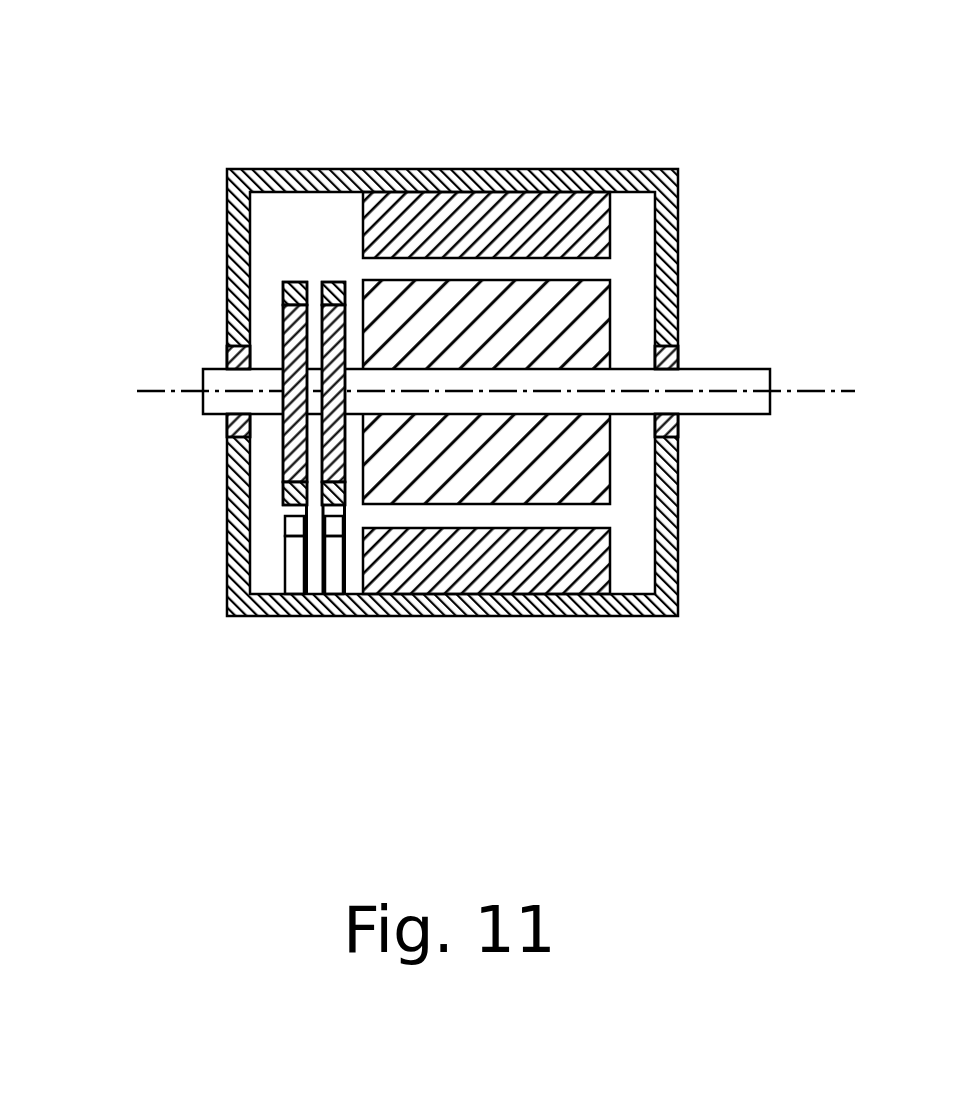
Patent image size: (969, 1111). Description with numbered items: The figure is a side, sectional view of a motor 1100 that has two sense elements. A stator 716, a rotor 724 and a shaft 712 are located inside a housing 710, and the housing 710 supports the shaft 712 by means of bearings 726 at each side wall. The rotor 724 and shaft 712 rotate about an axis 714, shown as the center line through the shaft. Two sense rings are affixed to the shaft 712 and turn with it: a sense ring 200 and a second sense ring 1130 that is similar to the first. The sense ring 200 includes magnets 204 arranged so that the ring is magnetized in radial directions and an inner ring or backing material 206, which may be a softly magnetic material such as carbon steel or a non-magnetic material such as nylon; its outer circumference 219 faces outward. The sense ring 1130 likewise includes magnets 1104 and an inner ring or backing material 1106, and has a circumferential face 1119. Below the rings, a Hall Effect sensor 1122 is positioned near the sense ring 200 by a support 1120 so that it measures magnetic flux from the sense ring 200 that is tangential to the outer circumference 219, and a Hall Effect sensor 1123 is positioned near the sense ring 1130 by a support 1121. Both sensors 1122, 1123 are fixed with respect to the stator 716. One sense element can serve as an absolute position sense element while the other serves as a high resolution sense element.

The motor 1100 is at (165, 128).
The housing 710 is at (632, 168).
The shaft 712 is at (745, 380).
The axis 714 is at (175, 392).
The stator 716 is at (537, 215).
The rotor 724 is at (595, 308).
The bearings 726 is at (228, 428).
The magnets 1104 is at (385, 585).
The inner ring or backing material 1106 is at (343, 308).
The magnets 204 is at (177, 311).
The inner ring or backing material 206 is at (185, 311).
The sense ring 200 is at (185, 311).
The outer circumference 219 is at (293, 293).
The circumferential face 1119 is at (463, 364).
The sense ring 1130 is at (347, 460).
The Hall Effect sensor 1122 is at (293, 527).
The support 1120 is at (295, 573).
The Hall Effect sensor 1123 is at (335, 530).
The support 1121 is at (337, 578).